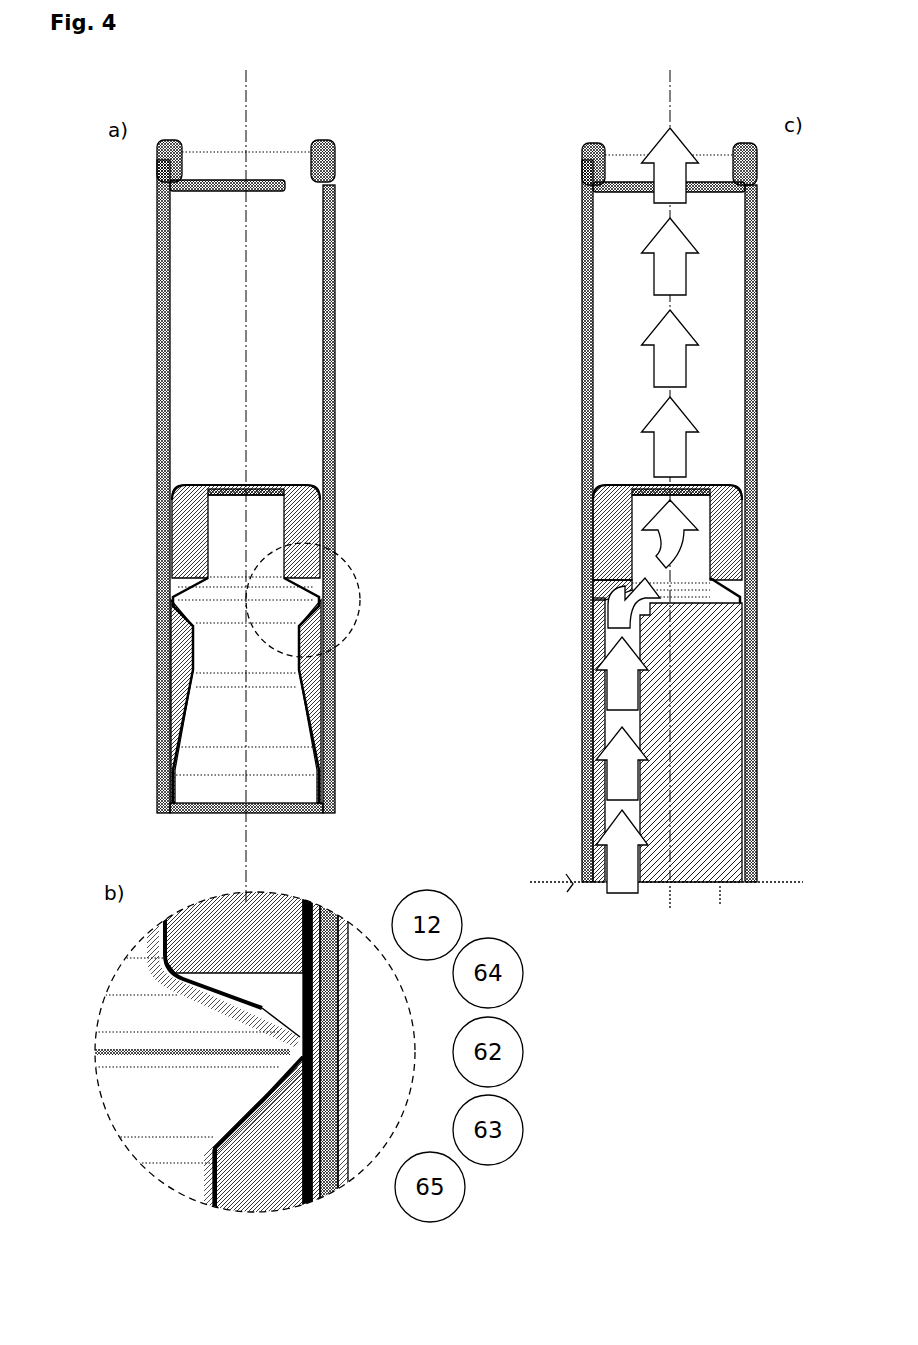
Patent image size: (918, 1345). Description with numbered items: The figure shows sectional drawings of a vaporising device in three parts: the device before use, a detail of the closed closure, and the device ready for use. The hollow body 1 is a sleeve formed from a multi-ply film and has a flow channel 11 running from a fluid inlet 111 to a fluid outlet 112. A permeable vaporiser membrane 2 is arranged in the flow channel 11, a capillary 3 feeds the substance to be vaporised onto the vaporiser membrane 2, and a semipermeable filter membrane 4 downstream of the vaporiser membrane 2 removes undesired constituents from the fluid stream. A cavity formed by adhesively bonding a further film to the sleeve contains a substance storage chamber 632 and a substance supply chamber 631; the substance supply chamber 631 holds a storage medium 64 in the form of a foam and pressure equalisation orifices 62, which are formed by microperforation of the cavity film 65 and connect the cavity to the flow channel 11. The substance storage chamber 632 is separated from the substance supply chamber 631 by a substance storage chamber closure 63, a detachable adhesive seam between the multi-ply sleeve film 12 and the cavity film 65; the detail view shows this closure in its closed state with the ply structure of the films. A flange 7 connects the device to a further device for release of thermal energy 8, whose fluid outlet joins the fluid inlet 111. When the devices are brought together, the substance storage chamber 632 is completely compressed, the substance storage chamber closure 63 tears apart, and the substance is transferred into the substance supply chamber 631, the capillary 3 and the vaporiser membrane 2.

The hollow body 1 is at (328, 284).
The vaporiser membrane 2 is at (268, 484).
The capillary 3 is at (275, 493).
The filter membrane 4 is at (288, 185).
The flange 7 is at (315, 777).
The device for release of thermal energy 8 is at (667, 790).
The flow channel 11 is at (683, 350).
The sleeve film 12 is at (392, 927).
The pressure equalisation orifices 62 is at (453, 1048).
The substance storage chamber closure 63 is at (453, 1120).
The storage medium 64 is at (453, 970).
The cavity film 65 is at (398, 1172).
The fluid inlet 111 is at (245, 795).
The fluid outlet 112 is at (245, 157).
The substance supply chamber 631 is at (298, 540).
The substance storage chamber 632 is at (313, 640).